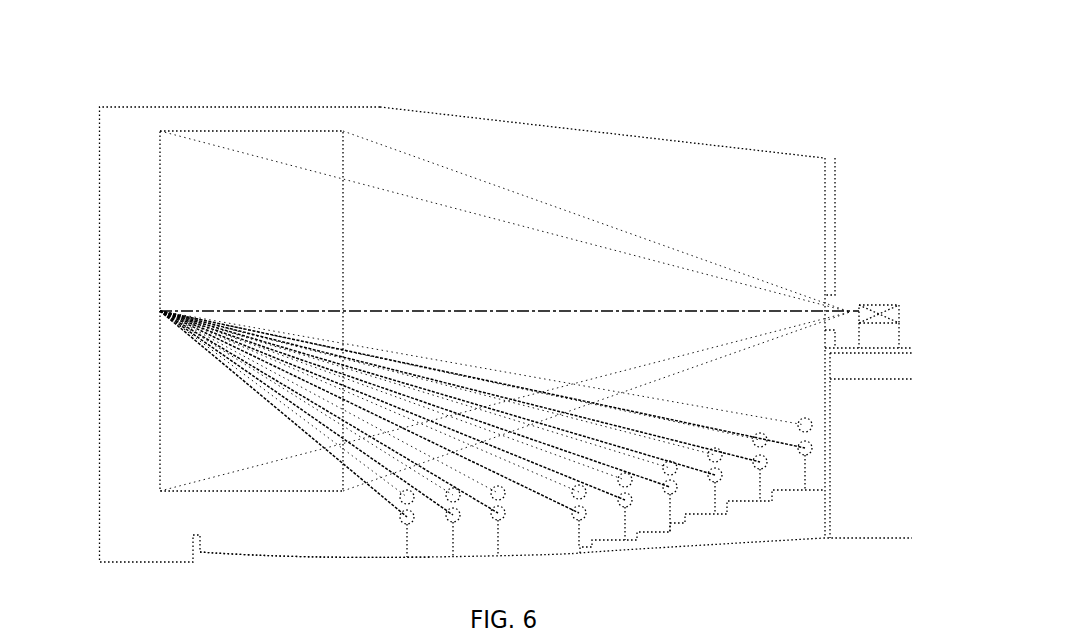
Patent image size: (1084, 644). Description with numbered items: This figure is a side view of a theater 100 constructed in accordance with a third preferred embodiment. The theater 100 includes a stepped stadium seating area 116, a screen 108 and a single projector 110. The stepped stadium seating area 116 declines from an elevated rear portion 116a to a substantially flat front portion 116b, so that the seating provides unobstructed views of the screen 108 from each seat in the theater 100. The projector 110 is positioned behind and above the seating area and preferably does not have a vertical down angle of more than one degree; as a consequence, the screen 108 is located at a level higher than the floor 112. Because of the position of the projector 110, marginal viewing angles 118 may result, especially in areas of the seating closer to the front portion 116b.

The theater 100 is at (668, 104).
The screen 108 is at (268, 131).
The projector 110 is at (875, 304).
The floor 112 is at (273, 556).
The stepped stadium seating area 116 is at (696, 531).
The elevated rear portion 116a is at (808, 489).
The substantially flat front portion 116b is at (405, 546).
The marginal viewing angles 118 is at (266, 398).